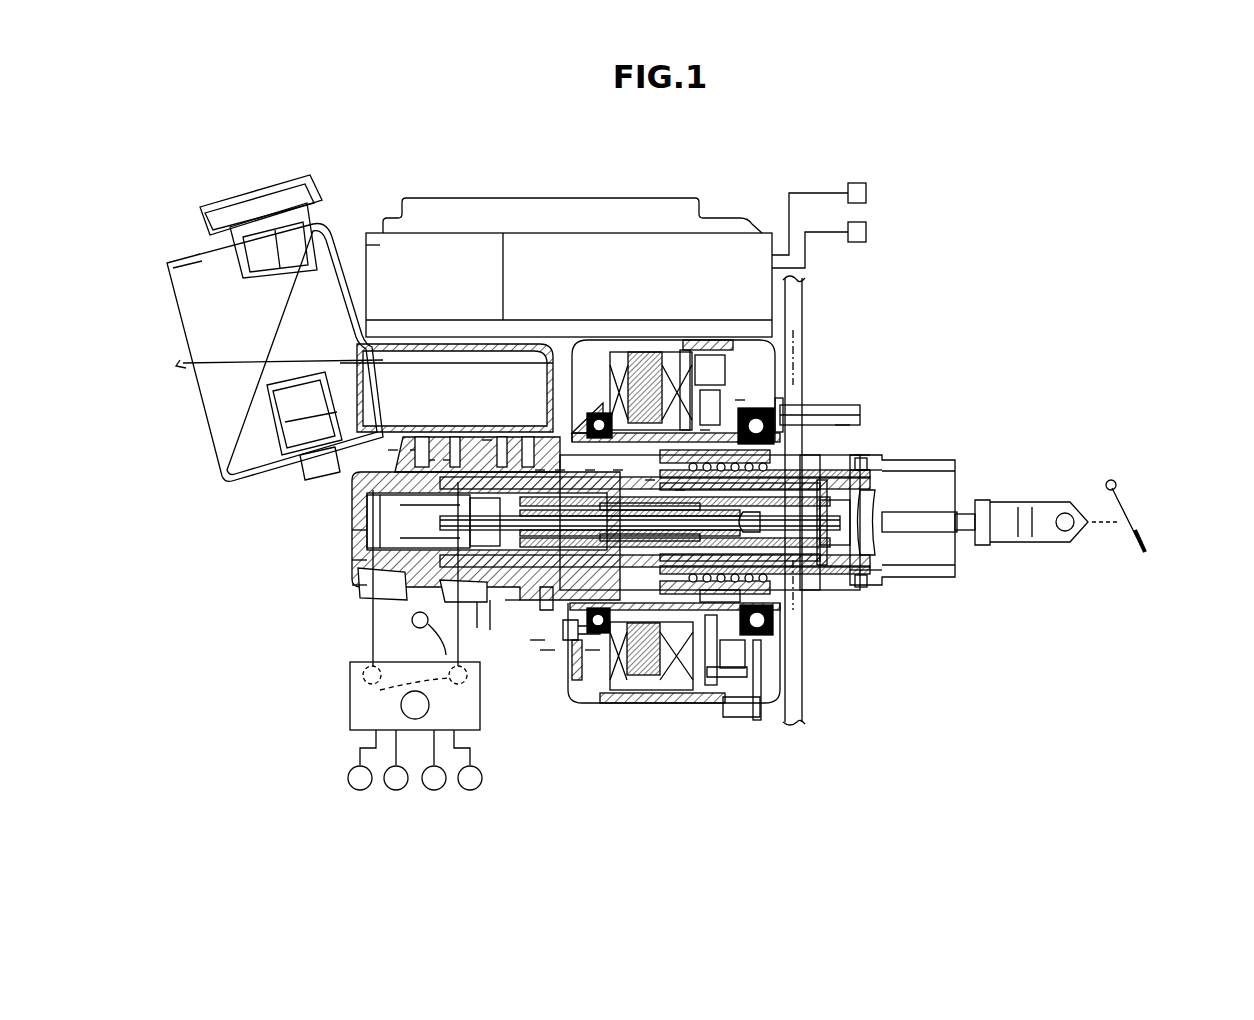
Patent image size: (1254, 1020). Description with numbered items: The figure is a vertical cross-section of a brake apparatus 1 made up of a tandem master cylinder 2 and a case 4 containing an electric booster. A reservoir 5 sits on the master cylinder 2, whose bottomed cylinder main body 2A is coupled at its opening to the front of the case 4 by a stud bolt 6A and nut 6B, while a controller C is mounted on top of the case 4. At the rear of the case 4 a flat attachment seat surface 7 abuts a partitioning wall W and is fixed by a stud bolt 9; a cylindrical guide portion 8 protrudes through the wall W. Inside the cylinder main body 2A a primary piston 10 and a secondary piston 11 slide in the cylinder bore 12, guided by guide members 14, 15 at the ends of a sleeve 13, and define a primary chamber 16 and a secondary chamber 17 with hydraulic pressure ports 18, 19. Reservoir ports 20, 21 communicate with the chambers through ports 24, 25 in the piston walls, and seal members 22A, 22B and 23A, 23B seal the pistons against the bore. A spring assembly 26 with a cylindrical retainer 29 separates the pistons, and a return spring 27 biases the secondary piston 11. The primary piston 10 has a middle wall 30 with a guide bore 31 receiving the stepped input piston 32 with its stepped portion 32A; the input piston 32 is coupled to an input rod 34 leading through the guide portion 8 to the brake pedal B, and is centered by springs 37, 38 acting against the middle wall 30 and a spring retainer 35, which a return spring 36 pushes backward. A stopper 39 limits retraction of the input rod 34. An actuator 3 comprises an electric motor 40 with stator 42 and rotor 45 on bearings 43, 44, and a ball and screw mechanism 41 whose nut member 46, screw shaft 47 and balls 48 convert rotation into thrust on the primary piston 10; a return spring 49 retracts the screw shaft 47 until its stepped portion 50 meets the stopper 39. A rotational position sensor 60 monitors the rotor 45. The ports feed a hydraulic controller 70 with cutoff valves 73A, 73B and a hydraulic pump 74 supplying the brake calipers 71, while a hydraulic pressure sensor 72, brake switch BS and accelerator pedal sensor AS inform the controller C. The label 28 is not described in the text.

The brake apparatus 1 is at (956, 276).
The master cylinder 2 is at (345, 598).
The cylinder main body 2A is at (352, 480).
The actuator 3 is at (760, 400).
The case 4 is at (755, 695).
The reservoir 5 is at (200, 268).
The stud bolt 6A is at (570, 645).
The nut 6B is at (540, 650).
The attachment seat surface 7 is at (790, 625).
The guide portion 8 is at (880, 470).
The stud bolt 9 is at (820, 408).
The primary piston 10 is at (620, 690).
The secondary piston 11 is at (352, 540).
The cylinder bore 12 is at (352, 586).
The sleeve 13 is at (477, 626).
The guide member 14 is at (415, 588).
The guide member 15 is at (535, 645).
The primary chamber 16 is at (510, 602).
The secondary chamber 17 is at (352, 515).
The hydraulic pressure port 18 is at (477, 445).
The hydraulic pressure port 19 is at (352, 498).
The reservoir port 20 is at (528, 450).
The reservoir port 21 is at (415, 455).
The seal member 22A is at (545, 655).
The seal member 22B is at (590, 655).
The seal member 23A is at (430, 465).
The seal member 23B is at (448, 465).
The port 24 is at (487, 445).
The port 25 is at (393, 455).
The spring assembly 26 is at (542, 470).
The return spring 27 is at (352, 562).
The flange 28 is at (490, 600).
The cylindrical retainer 29 is at (560, 470).
The middle wall 30 is at (690, 705).
The guide bore 31 is at (805, 598).
The input piston 32 is at (665, 695).
The stepped portion 32A is at (680, 490).
The input rod 34 is at (958, 520).
The spring retainer 35 is at (865, 470).
The return spring 36 is at (818, 586).
The spring 37 is at (645, 705).
The spring 38 is at (845, 586).
The stopper 39 is at (925, 500).
The electric motor 40 is at (705, 430).
The ball and screw mechanism 41 is at (835, 428).
The stator 42 is at (650, 480).
The bearing 43 is at (618, 470).
The bearing 44 is at (772, 420).
The rotor 45 is at (740, 400).
The nut member 46 is at (735, 705).
The screw shaft 47 is at (862, 590).
The balls 48 is at (715, 705).
The return spring 49 is at (590, 470).
The stepped portion 50 is at (862, 455).
The rotational position sensor 60 is at (775, 660).
The hydraulic controller 70 is at (352, 745).
The brake caliper 71 is at (348, 783).
The hydraulic pressure sensor 72 is at (449, 583).
The cutoff valve 73A is at (380, 690).
The cutoff valve 73B is at (362, 675).
The hydraulic pump 74 is at (360, 720).
The brake switch BS is at (866, 193).
The accelerator pedal sensor AS is at (866, 232).
The controller C is at (780, 240).
The partitioning wall W is at (805, 715).
The brake pedal B is at (1140, 545).